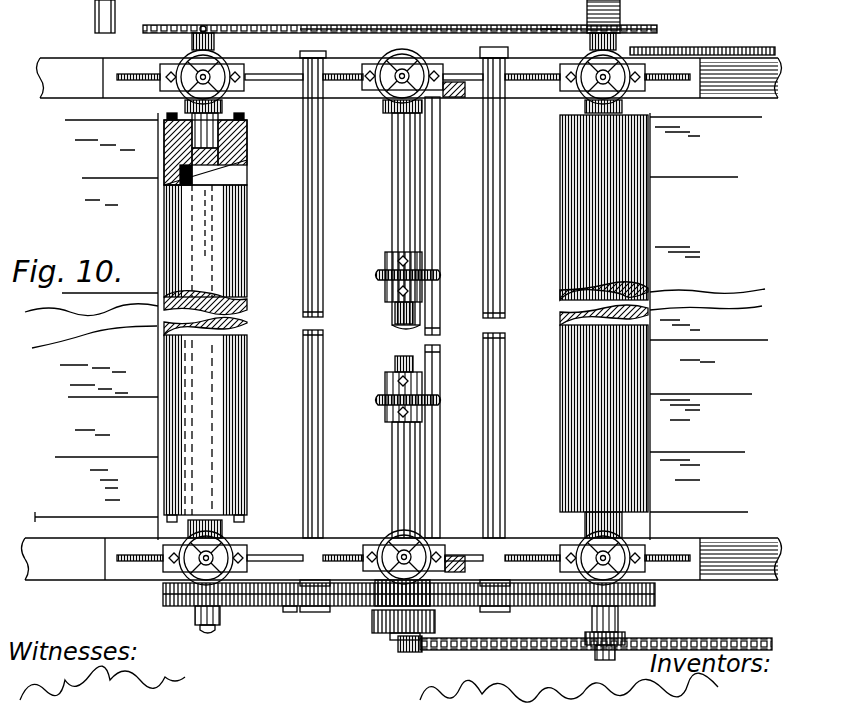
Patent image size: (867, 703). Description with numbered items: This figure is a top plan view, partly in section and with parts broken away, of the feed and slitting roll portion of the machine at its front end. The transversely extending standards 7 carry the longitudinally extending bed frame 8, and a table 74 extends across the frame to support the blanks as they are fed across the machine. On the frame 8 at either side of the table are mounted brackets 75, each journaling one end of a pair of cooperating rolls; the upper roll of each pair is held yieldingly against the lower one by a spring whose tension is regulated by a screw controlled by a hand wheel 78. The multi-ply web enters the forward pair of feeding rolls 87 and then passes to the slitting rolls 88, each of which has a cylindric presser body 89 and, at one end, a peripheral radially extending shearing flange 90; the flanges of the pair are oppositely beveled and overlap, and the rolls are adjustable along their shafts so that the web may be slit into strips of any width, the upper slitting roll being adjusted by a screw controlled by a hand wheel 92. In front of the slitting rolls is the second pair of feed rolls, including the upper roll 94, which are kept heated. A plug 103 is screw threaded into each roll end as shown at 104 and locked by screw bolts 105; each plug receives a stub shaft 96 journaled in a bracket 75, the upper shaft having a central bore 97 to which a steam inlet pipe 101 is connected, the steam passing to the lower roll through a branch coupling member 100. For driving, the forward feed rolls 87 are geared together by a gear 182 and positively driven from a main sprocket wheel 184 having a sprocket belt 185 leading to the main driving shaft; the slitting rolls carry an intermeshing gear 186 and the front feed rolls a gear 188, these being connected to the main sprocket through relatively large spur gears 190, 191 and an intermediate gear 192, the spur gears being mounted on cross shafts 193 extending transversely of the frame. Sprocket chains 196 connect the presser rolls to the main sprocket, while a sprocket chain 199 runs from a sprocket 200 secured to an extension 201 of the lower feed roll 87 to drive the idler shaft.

The standards 7 is at (115, 5).
The bed frame 8 is at (60, 63).
The table 74 is at (680, 206).
The brackets 75 is at (165, 67).
The hand wheel 78 is at (215, 60).
The forward pair of feeding rolls 87 is at (580, 370).
The slitting rolls 88 is at (383, 292).
The cylindric presser body 89 is at (392, 303).
The shearing flange 90 is at (432, 276).
The hand wheel 92 is at (386, 102).
The feed roll 94 is at (245, 358).
The stub shaft 96 is at (164, 131).
The bore 97 is at (240, 165).
The branch coupling member 100 is at (215, 632).
The steam inlet pipe 101 is at (207, 30).
The plug 103 is at (243, 156).
The screw thread 104 is at (246, 138).
The screw bolts 105 is at (168, 116).
The gear 182 is at (628, 602).
The main sprocket wheel 184 is at (498, 651).
The sprocket belt 185 is at (416, 653).
The gear 186 is at (436, 627).
The gear 188 is at (170, 606).
The spur gear 190 is at (290, 612).
The spur gear 191 is at (409, 613).
The intermediate gear 192 is at (372, 608).
The cross shafts 193 is at (323, 469).
The sprocket chains 196 is at (745, 47).
The sprocket chain 199 is at (466, 26).
The sprocket 200 is at (648, 23).
The extension 201 is at (560, 26).